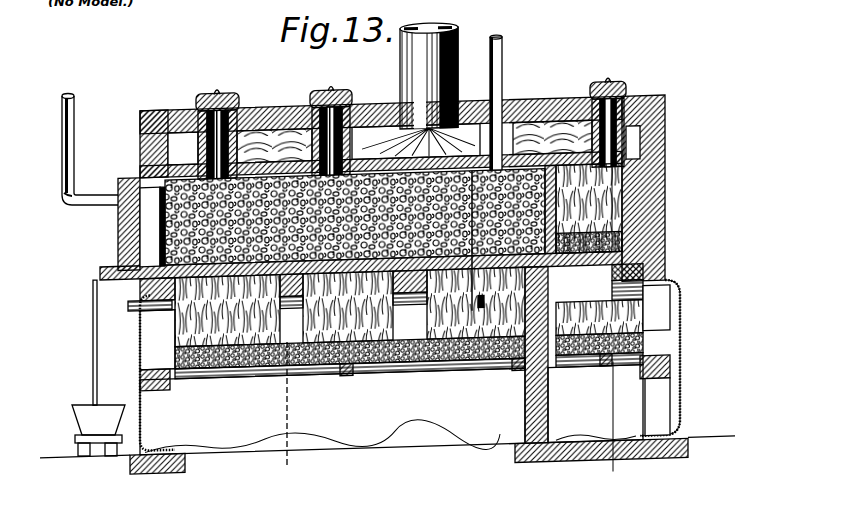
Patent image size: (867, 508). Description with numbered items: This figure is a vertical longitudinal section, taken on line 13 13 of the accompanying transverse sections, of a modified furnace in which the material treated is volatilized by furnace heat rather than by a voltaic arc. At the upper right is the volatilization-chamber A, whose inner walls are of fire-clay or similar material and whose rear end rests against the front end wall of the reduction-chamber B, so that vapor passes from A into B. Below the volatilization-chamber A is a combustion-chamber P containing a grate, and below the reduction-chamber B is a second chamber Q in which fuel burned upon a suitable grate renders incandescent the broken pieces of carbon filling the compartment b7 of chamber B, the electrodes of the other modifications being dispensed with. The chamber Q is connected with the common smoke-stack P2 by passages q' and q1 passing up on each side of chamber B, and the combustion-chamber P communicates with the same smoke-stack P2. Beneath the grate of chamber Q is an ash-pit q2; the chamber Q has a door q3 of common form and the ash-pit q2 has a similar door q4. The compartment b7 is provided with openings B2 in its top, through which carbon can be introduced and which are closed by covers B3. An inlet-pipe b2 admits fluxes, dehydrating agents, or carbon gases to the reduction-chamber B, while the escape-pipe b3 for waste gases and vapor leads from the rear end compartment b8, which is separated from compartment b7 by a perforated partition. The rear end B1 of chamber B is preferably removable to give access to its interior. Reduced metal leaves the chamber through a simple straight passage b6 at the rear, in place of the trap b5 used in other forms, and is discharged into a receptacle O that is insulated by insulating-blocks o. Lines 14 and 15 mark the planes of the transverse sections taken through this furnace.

The openings B2 is at (296, 110).
The covers B3 is at (216, 100).
The section line 14 14 is at (329, 100).
The smoke-stack P2 is at (416, 79).
The inlet-pipe b2 is at (509, 73).
The section line 15 15 is at (606, 85).
The section line 13 13 is at (618, 507).
The passages q' is at (670, 134).
The escape-pipe b3 is at (84, 132).
The rear end of chamber B B1 is at (112, 217).
The straight passage b6 is at (127, 268).
The rear end compartment b8 is at (150, 228).
The reduction-chamber B is at (227, 311).
The combustion-chamber P is at (348, 307).
The compartment b7 is at (476, 254).
The trap b5 is at (478, 308).
The volatilization-chamber A is at (589, 208).
The chamber Q is at (599, 309).
The door q3 is at (658, 320).
The passages q1 is at (590, 362).
The ash-pit q2 is at (595, 404).
The door q4 is at (655, 399).
The receptacle O is at (78, 416).
The insulating-blocks o is at (120, 452).